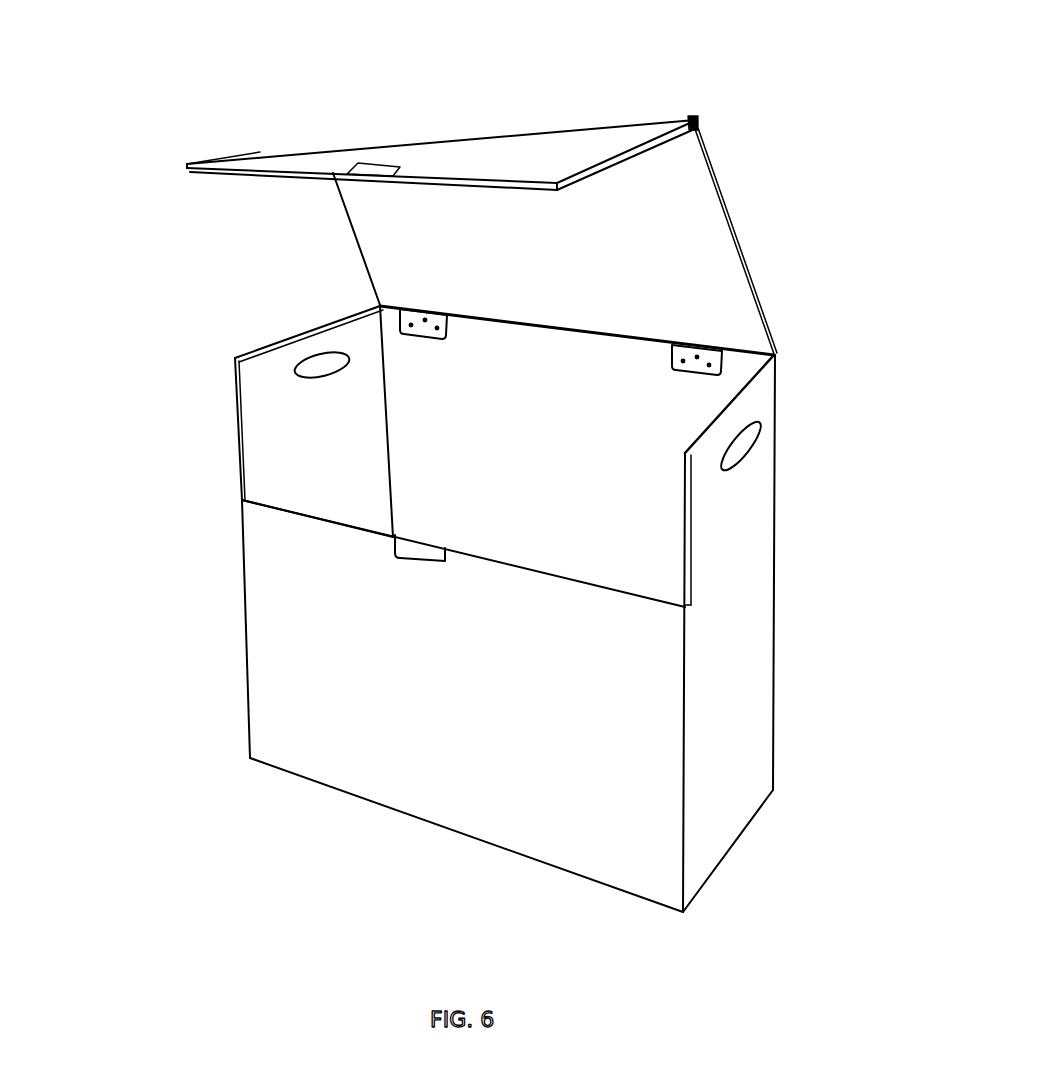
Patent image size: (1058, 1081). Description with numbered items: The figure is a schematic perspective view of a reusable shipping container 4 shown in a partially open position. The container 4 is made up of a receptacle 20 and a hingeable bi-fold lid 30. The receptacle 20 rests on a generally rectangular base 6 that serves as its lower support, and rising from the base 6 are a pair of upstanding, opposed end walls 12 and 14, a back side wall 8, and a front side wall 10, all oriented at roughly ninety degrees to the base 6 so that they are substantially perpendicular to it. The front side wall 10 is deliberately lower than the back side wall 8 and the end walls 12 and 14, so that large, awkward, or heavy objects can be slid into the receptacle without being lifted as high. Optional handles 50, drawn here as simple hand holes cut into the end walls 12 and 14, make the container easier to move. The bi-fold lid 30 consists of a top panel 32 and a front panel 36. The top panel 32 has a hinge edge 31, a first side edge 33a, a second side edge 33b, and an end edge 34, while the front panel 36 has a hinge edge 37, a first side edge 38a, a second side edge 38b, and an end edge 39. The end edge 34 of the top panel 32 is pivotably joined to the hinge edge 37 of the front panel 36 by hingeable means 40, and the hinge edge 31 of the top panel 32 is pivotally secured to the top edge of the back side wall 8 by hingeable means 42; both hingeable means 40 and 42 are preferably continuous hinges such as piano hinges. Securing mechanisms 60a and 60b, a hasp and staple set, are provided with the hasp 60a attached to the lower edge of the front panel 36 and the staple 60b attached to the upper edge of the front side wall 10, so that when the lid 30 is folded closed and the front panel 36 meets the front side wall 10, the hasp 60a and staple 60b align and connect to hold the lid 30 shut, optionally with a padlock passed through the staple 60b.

The container 4 is at (134, 479).
The base 6 is at (430, 820).
The back side wall 8 is at (546, 464).
The front side wall 10 is at (302, 703).
The end wall 12 is at (737, 790).
The end wall 14 is at (297, 333).
The receptacle 20 is at (853, 365).
The hingeable bi-fold lid 30 is at (840, 283).
The hinge edge 31 is at (545, 325).
The top panel 32 is at (580, 251).
The first side edge 33a is at (745, 258).
The second side edge 33b is at (358, 248).
The end edge 34 is at (700, 127).
The front panel 36 is at (513, 156).
The hinge edge 37 is at (493, 133).
The first side edge 38a is at (267, 150).
The second side edge 38b is at (640, 152).
The end edge 39 is at (283, 177).
The hingeable means 40 is at (697, 115).
The hingeable means 42 is at (430, 313).
The handles 50 is at (747, 465).
The securing mechanism 60a is at (373, 170).
The securing mechanism 60b is at (433, 553).